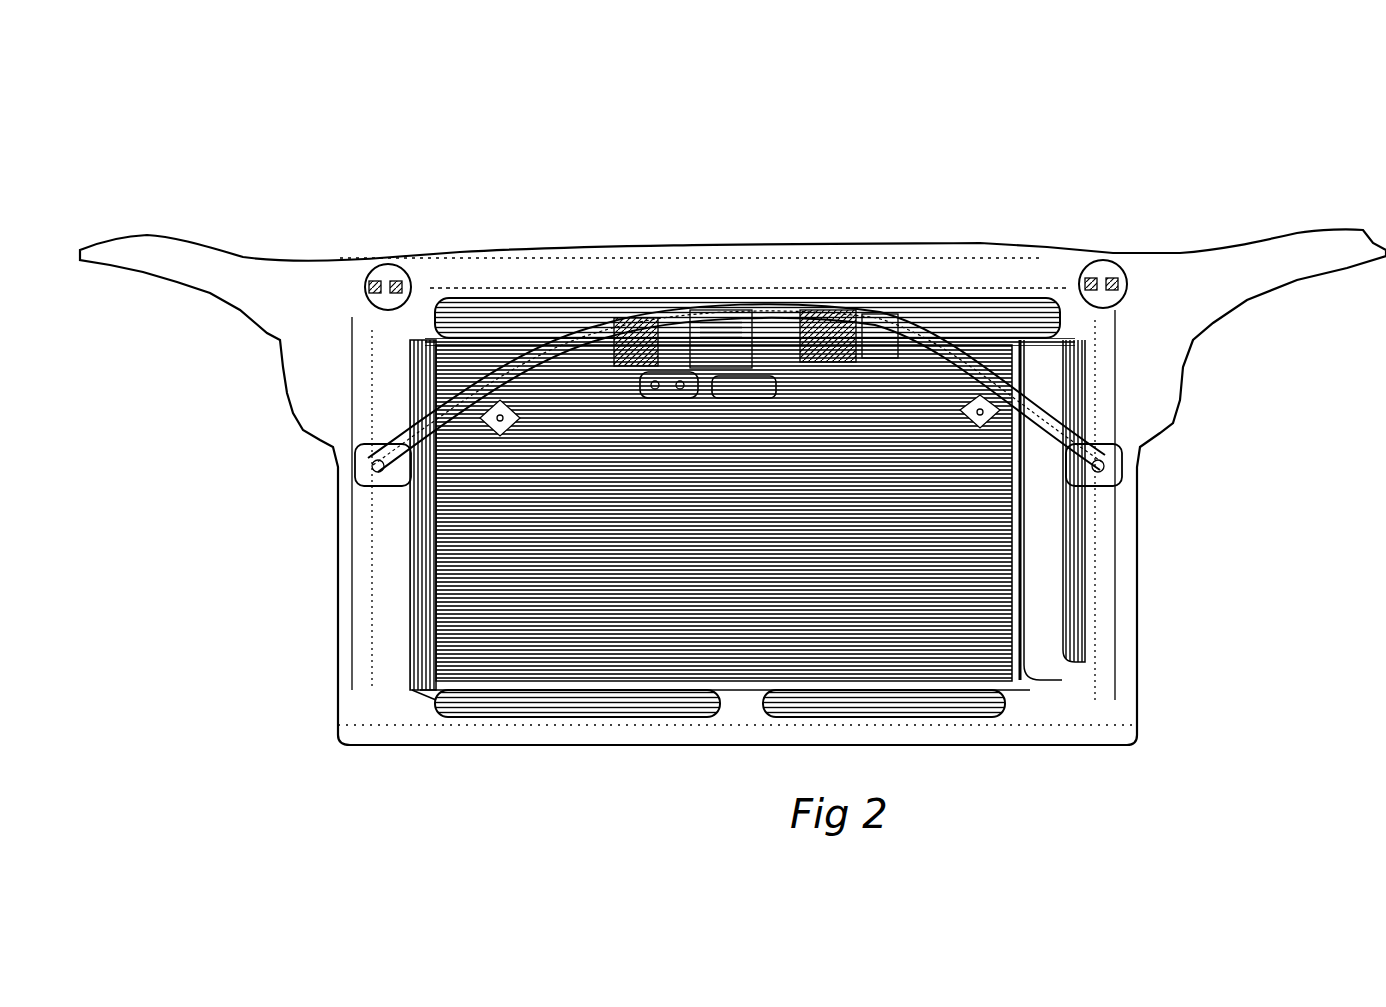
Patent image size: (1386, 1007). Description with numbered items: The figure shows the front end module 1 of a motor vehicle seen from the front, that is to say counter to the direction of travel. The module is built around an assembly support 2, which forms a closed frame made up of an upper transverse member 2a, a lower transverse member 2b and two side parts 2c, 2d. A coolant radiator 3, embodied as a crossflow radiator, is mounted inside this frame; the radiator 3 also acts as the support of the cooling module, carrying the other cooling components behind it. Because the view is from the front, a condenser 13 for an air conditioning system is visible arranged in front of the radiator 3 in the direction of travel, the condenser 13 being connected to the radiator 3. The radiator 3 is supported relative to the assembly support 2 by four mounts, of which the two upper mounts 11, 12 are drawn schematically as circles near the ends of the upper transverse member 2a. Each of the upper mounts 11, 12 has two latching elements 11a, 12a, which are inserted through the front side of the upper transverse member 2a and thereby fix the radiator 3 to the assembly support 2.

The front end module 1 is at (773, 192).
The assembly support 2 is at (272, 405).
The upper transverse member 2a is at (548, 248).
The lower transverse member 2b is at (713, 737).
The side part 2c is at (350, 532).
The side part 2d is at (1130, 540).
The coolant radiator 3 is at (415, 588).
The upper mount 11 is at (368, 273).
The latching elements 11a is at (385, 280).
The upper mount 12 is at (1137, 253).
The latching elements 12a is at (1107, 277).
The condenser 13 is at (510, 680).